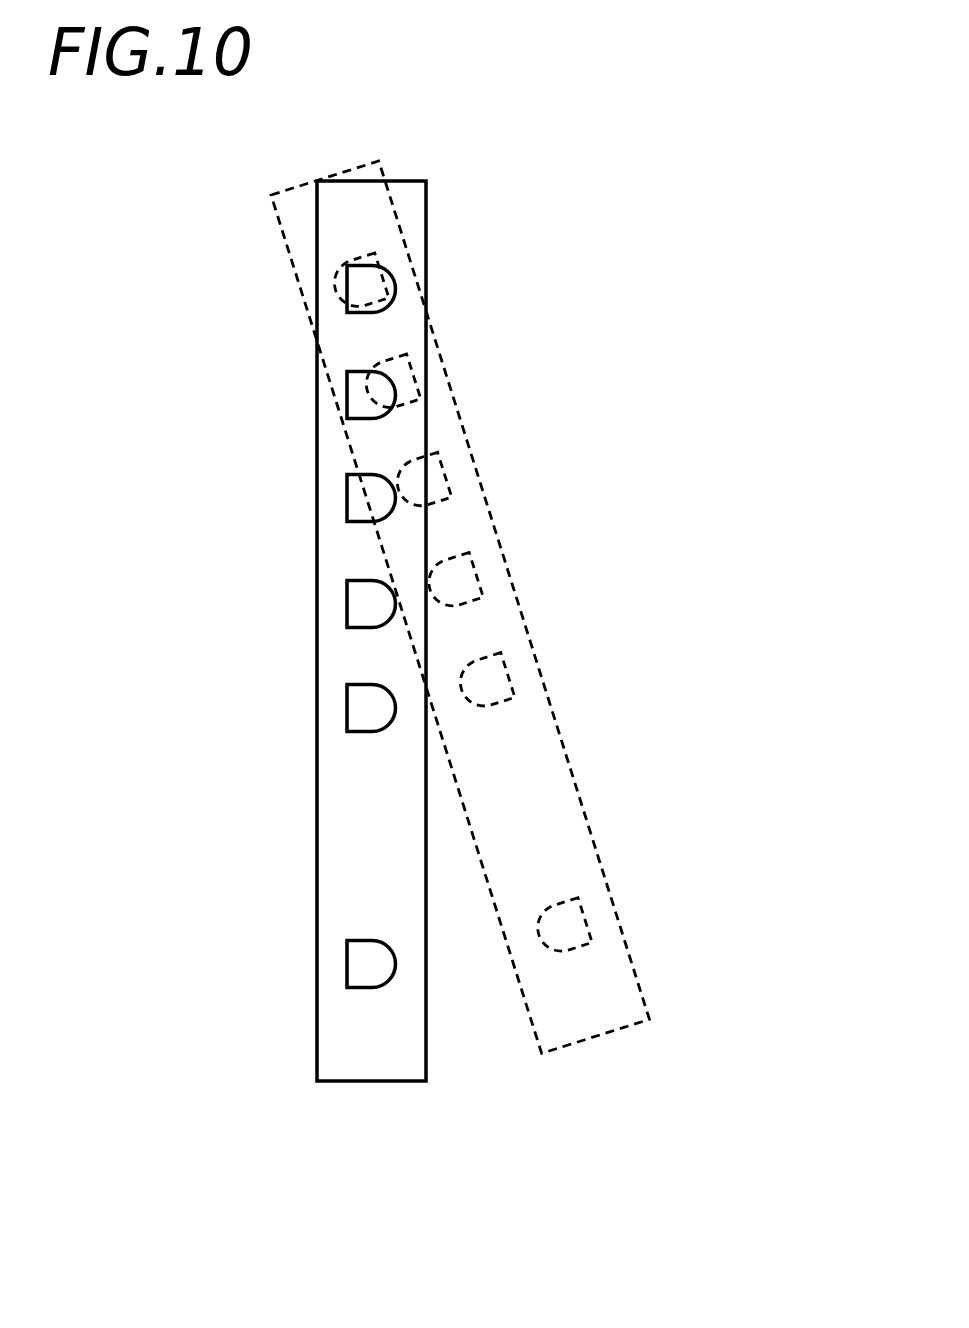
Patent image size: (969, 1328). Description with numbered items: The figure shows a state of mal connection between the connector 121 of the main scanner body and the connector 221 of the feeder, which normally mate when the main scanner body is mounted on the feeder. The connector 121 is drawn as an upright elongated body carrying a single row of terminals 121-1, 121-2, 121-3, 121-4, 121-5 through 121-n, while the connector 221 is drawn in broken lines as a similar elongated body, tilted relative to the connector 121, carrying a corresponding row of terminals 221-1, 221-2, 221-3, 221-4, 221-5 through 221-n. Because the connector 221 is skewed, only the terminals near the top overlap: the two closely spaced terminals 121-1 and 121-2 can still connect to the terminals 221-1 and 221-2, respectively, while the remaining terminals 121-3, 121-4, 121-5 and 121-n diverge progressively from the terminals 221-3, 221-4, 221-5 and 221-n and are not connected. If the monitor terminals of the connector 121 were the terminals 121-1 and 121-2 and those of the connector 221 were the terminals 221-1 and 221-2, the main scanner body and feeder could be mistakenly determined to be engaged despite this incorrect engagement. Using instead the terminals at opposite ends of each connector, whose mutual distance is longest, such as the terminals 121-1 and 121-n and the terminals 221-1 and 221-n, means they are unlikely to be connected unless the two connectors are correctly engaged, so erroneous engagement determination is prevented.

The connector 121 is at (373, 1083).
The terminal 121-1 is at (372, 313).
The terminal 121-2 is at (347, 391).
The terminal 121-3 is at (347, 498).
The terminal 121-4 is at (347, 604).
The terminal 121-5 is at (347, 710).
The terminal 121-n is at (347, 960).
The connector 221 is at (597, 1040).
The terminal 221-1 is at (358, 260).
The terminal 221-2 is at (425, 364).
The terminal 221-3 is at (447, 477).
The terminal 221-4 is at (473, 567).
The terminal 221-5 is at (508, 672).
The terminal 221-n is at (590, 922).